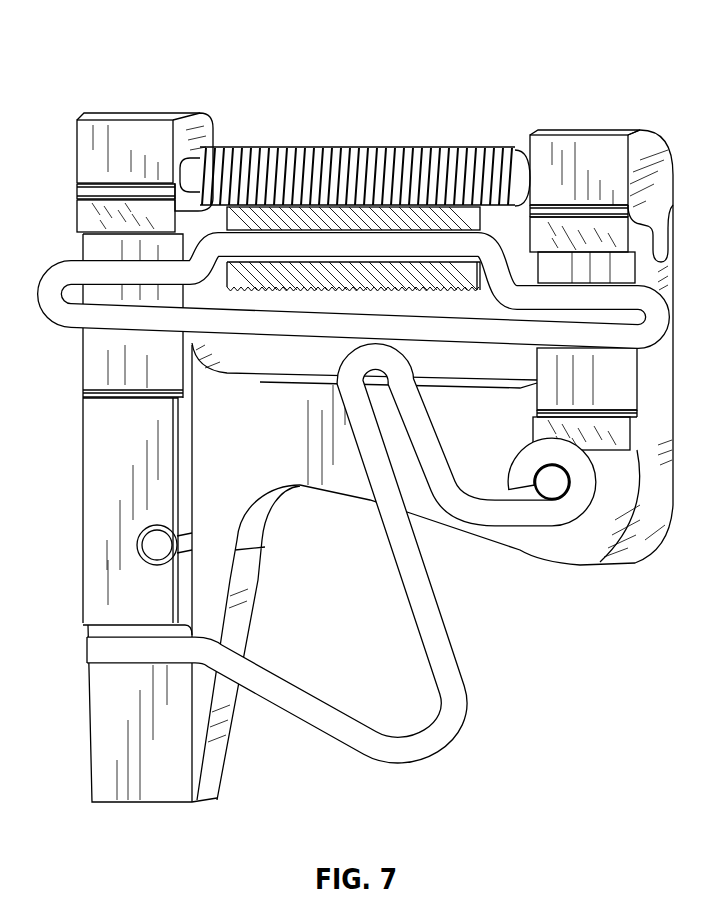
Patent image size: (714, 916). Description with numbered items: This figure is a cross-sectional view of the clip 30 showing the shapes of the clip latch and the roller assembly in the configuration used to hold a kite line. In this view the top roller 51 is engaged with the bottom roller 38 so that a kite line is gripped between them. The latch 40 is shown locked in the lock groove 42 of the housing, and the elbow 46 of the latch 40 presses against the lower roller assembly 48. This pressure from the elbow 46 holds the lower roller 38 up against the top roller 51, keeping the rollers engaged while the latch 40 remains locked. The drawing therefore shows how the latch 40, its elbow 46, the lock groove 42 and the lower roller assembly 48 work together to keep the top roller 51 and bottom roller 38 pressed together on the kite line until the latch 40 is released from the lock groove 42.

The clip 30 is at (588, 52).
The bottom roller 38 is at (233, 213).
The latch 40 is at (443, 697).
The lock groove 42 is at (113, 627).
The elbow 46 is at (367, 358).
The lower roller assembly 48 is at (222, 320).
The top roller 51 is at (370, 176).